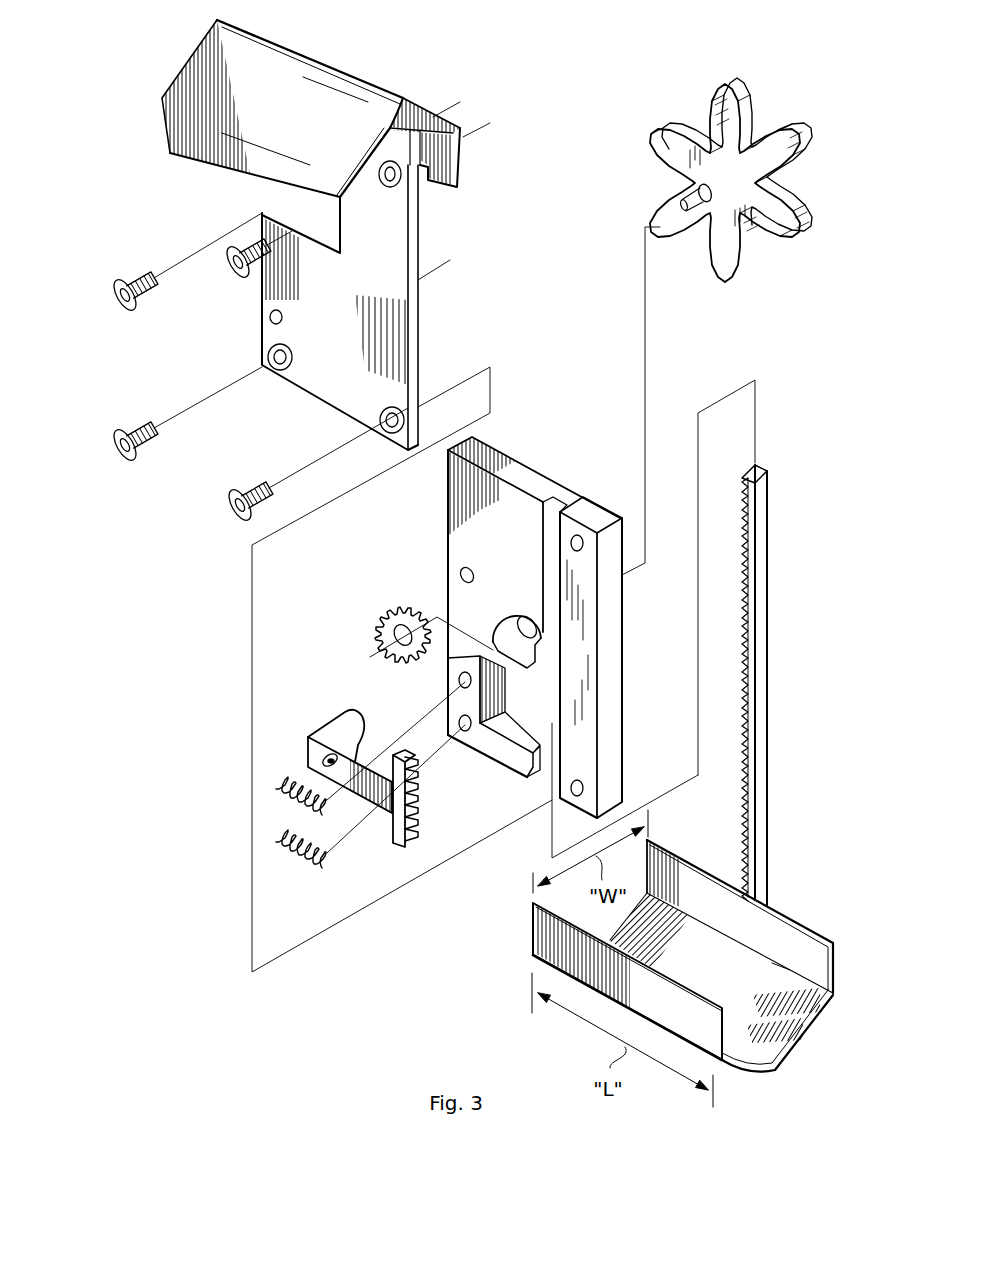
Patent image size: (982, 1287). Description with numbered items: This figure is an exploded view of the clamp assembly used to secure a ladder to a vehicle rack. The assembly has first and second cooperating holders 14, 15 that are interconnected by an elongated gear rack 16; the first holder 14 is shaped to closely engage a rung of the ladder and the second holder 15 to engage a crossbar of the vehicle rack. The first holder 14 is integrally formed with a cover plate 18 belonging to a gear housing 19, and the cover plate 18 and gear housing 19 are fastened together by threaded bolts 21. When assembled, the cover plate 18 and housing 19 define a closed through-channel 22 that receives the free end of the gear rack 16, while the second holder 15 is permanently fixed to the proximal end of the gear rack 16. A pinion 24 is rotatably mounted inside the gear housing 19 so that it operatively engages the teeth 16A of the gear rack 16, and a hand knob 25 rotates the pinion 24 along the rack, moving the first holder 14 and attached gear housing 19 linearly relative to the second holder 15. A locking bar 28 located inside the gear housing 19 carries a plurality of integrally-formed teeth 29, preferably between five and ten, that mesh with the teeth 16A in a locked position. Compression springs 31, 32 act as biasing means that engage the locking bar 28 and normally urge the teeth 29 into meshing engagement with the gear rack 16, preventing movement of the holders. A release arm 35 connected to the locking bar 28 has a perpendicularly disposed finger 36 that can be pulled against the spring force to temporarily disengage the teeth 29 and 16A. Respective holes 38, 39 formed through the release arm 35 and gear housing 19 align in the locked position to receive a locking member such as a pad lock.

The first holder 14 is at (172, 150).
The second holder 15 is at (810, 925).
The gear rack 16 is at (792, 685).
The teeth of the gear rack 16A is at (745, 650).
The cover plate 18 is at (400, 332).
The gear housing 19 is at (522, 477).
The threaded bolts 21 is at (118, 447).
The through-channel 22 is at (562, 505).
The pinion 24 is at (388, 612).
The hand knob 25 is at (747, 127).
The locking bar 28 is at (420, 865).
The teeth of the locking bar 29 is at (425, 815).
The compression spring 31 is at (277, 790).
The compression spring 32 is at (277, 840).
The release arm 35 is at (350, 778).
The finger 36 is at (338, 735).
The hole 38 is at (310, 756).
The hole 39 is at (453, 677).